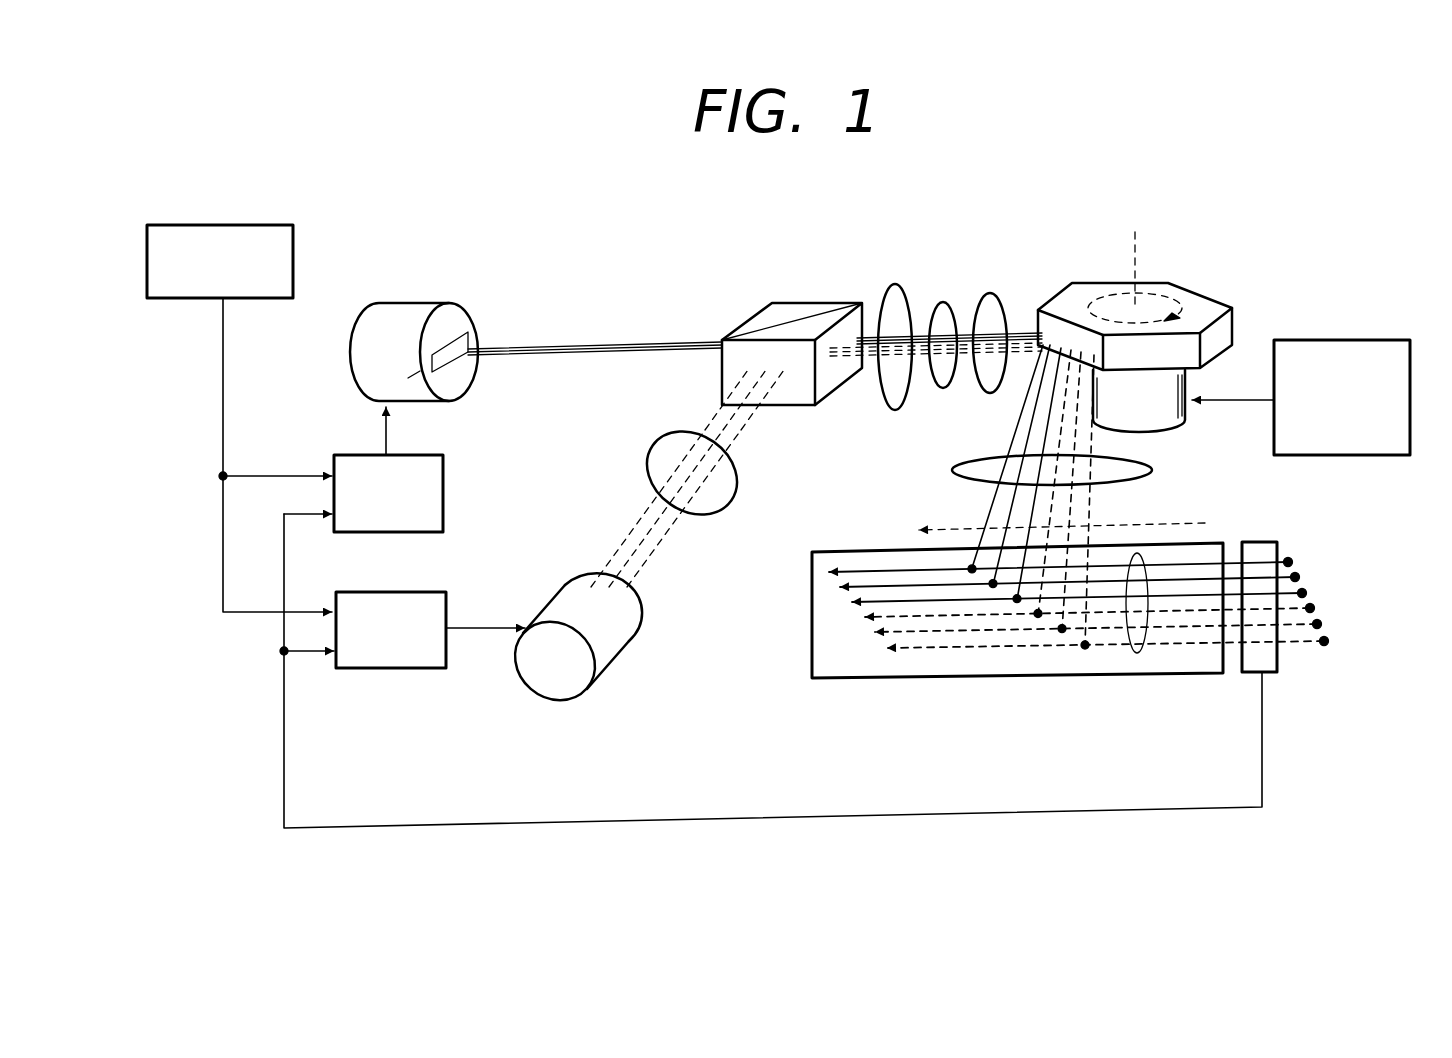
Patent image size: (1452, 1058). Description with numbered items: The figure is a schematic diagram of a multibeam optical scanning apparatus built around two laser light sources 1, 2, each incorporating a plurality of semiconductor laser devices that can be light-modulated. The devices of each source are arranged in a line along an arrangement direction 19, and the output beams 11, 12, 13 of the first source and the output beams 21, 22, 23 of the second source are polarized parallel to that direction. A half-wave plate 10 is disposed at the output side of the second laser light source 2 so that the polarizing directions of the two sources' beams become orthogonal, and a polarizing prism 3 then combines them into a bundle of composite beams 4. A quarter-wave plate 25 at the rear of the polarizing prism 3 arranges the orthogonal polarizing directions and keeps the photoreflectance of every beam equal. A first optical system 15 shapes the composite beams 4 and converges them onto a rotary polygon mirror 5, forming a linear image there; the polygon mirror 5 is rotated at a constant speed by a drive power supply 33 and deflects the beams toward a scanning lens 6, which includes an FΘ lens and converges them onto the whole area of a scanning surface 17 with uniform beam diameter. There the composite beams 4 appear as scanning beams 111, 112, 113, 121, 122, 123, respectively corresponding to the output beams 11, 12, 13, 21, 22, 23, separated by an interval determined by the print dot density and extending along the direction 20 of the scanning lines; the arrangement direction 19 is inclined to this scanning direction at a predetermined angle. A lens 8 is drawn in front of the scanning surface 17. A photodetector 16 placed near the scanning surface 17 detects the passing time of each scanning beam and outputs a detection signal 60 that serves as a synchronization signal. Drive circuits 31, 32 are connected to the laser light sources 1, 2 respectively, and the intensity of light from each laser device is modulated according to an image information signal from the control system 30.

The laser light source 1 is at (408, 307).
The laser light source 2 is at (608, 660).
The polarizing prism 3 is at (810, 303).
The composite beams 4 is at (957, 310).
The rotary polygon mirror 5 is at (1198, 294).
The scanning lens 6 is at (1155, 468).
The lens 8 is at (1122, 660).
The half-wave plate 10 is at (708, 517).
The output beam 11 is at (667, 342).
The output beam 12 is at (607, 347).
The output beam 13 is at (555, 345).
The first optical system 15 is at (1007, 307).
The photodetector 16 is at (1258, 541).
The scanning surface 17 is at (1157, 674).
The arrangement direction 19 is at (489, 322).
The direction of scanning lines 20 is at (1182, 522).
The output beam 21 is at (643, 515).
The output beam 22 is at (638, 543).
The output beam 23 is at (633, 567).
The quarter-wave plate 25 is at (903, 293).
The control system 30 is at (294, 250).
The drive circuit 31 is at (445, 472).
The drive circuit 32 is at (447, 605).
The drive power supply 33 is at (1358, 338).
The detection signal 60 is at (936, 813).
The scanning beam 111 is at (1292, 560).
The scanning beam 112 is at (1299, 575).
The scanning beam 113 is at (1306, 593).
The scanning beam 121 is at (1314, 609).
The scanning beam 122 is at (1321, 626).
The scanning beam 123 is at (1328, 643).